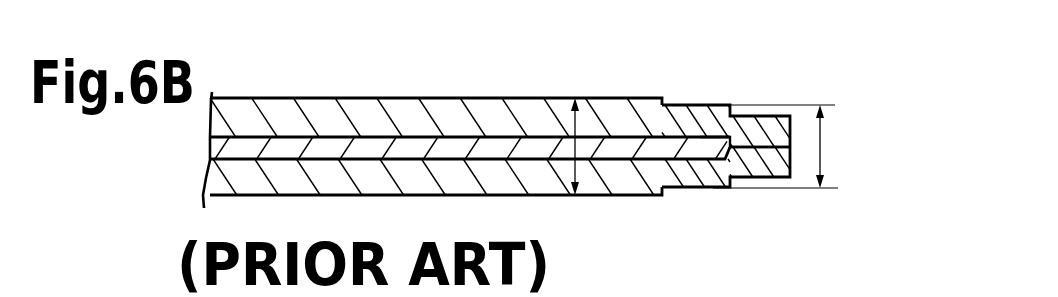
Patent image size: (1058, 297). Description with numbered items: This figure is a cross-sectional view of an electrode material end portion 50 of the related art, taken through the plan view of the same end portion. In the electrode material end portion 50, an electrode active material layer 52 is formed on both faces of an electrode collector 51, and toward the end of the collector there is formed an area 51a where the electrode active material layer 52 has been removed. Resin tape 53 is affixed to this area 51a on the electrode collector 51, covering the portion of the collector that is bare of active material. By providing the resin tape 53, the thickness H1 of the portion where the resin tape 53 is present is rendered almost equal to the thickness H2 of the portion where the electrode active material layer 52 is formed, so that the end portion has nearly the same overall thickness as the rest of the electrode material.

The electrode material end portion 50 is at (551, 138).
The electrode collector 51 is at (500, 146).
The area where the electrode active material layer is removed 51a is at (700, 183).
The electrode active material layer 52 is at (395, 97).
The resin tape 53 is at (712, 108).
The thickness of the portion where the resin tape is provided H1 is at (826, 134).
The thickness of the portion where the electrode active material layer is formed H2 is at (604, 112).